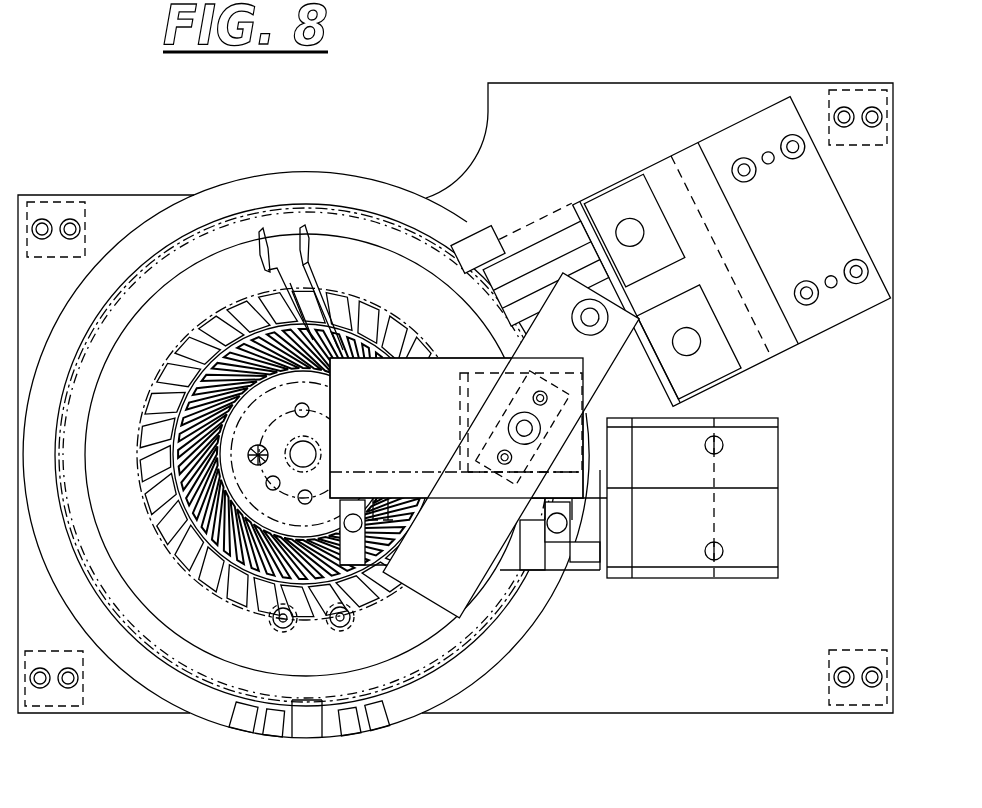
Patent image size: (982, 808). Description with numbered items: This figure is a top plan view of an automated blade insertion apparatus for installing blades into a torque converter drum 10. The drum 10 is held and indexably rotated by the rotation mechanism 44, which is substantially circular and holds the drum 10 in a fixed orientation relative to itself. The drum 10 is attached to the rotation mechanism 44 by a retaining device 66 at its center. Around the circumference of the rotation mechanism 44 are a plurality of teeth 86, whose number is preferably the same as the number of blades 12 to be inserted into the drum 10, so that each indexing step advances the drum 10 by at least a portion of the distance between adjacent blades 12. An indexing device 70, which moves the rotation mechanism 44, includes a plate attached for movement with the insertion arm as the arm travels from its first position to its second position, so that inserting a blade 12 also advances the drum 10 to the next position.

The torque converter drum 10 is at (338, 206).
The blades 12 is at (260, 232).
The rotation mechanism 44 is at (464, 690).
The retaining device 66 is at (262, 402).
The indexing device 70 is at (637, 322).
The teeth 86 is at (315, 742).